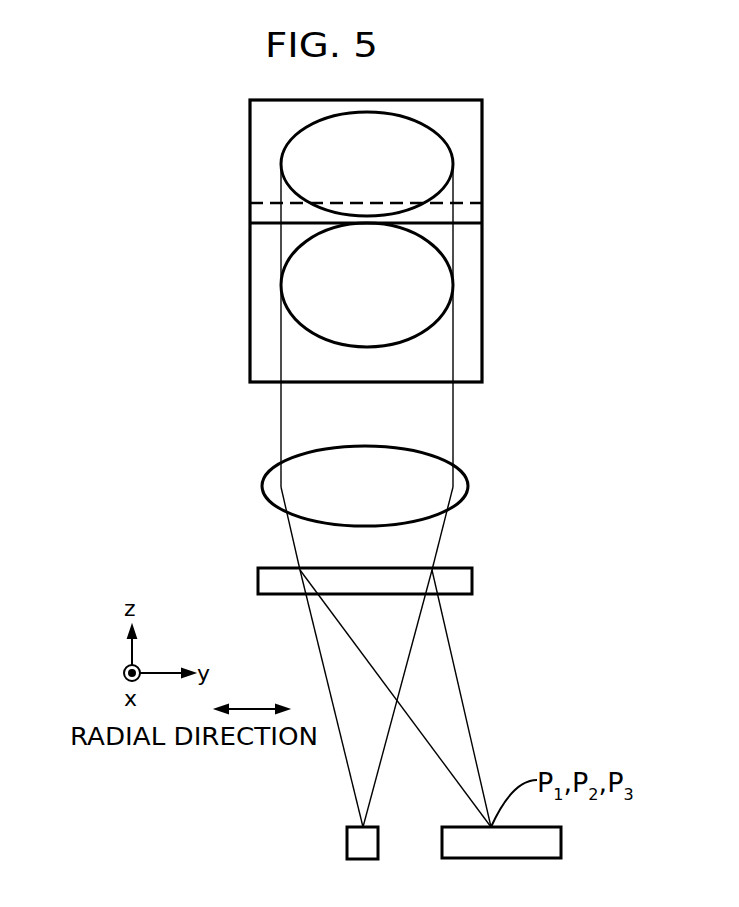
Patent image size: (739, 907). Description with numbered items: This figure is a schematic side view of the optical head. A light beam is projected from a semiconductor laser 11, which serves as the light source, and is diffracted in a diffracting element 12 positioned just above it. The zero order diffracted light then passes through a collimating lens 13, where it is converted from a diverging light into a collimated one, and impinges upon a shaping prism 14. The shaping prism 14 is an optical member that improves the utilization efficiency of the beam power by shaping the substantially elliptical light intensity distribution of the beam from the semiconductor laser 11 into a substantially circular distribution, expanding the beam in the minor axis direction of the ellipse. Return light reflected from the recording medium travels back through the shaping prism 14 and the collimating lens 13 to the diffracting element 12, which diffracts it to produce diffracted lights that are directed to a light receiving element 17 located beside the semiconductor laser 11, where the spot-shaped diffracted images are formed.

The semiconductor laser 11 is at (347, 846).
The diffracting element 12 is at (264, 581).
The collimating lens 13 is at (265, 484).
The shaping prism 14 is at (259, 316).
The light receiving element 17 is at (561, 845).